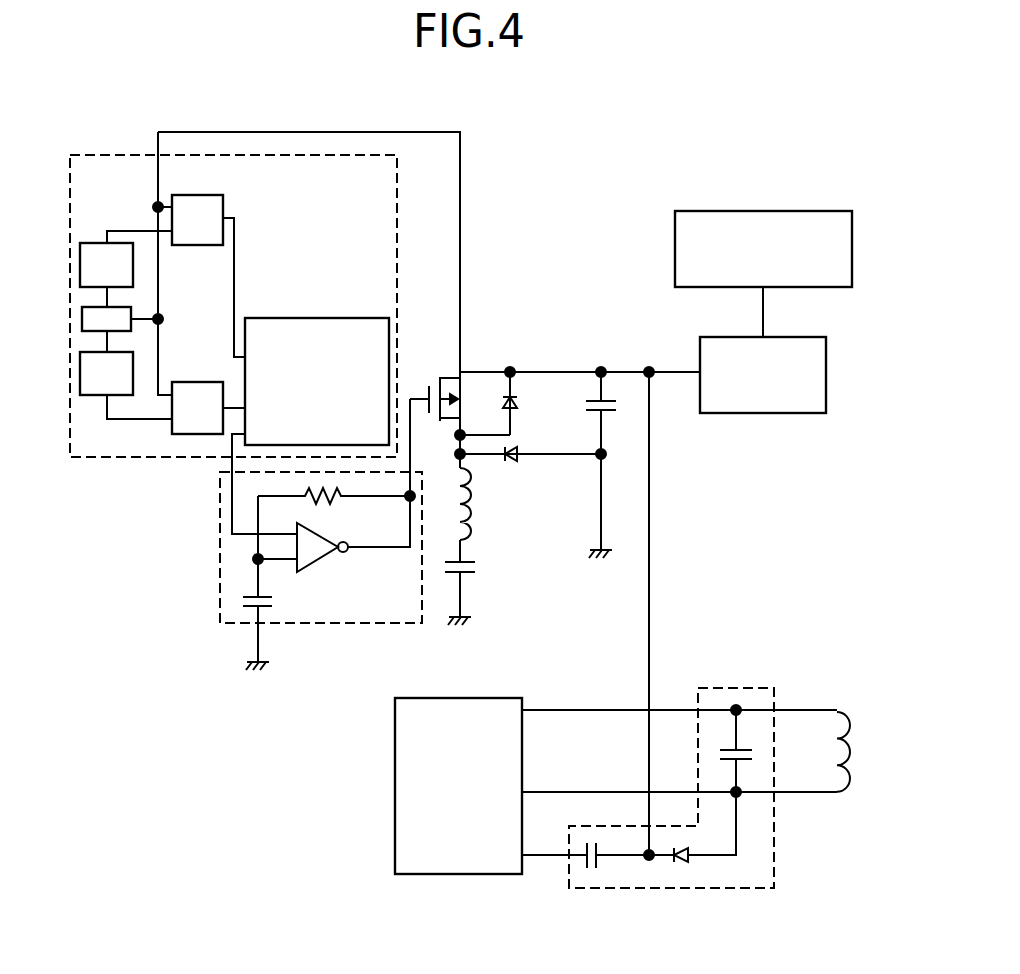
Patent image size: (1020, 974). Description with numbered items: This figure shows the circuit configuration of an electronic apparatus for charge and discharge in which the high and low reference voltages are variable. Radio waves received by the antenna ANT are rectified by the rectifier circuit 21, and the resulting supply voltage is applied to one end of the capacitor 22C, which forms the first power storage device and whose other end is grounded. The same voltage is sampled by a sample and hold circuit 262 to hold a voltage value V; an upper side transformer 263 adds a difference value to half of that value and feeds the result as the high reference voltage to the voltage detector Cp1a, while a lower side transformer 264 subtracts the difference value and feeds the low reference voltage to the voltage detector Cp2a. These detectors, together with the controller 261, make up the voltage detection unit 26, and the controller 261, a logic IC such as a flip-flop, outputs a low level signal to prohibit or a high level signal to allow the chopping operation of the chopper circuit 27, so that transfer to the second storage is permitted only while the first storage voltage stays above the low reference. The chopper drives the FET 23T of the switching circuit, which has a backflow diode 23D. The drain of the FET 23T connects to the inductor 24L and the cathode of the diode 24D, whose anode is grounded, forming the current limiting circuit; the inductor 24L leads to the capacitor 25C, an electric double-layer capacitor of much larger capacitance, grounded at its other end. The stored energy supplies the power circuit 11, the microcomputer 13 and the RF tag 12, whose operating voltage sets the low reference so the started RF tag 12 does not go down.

The voltage detection unit 26 is at (102, 153).
The upper side transformer 263 is at (88, 240).
The sample and hold circuit 262 is at (136, 308).
The lower side transformer 264 is at (97, 393).
The voltage detector Cp1a is at (198, 195).
The voltage detector Cp2a is at (190, 438).
The controller 261 is at (313, 317).
The chopper circuit 27 is at (217, 548).
The FET 23T is at (435, 423).
The backflow diode 23D is at (532, 403).
The capacitor 22C is at (613, 465).
The diode 24D is at (520, 468).
The inductor 24L is at (485, 504).
The capacitor 25C is at (472, 582).
The microcomputer 13 is at (829, 211).
The power circuit 11 is at (829, 373).
The RF tag 12 is at (395, 787).
The rectifier circuit 21 is at (655, 889).
The antenna ANT is at (839, 740).